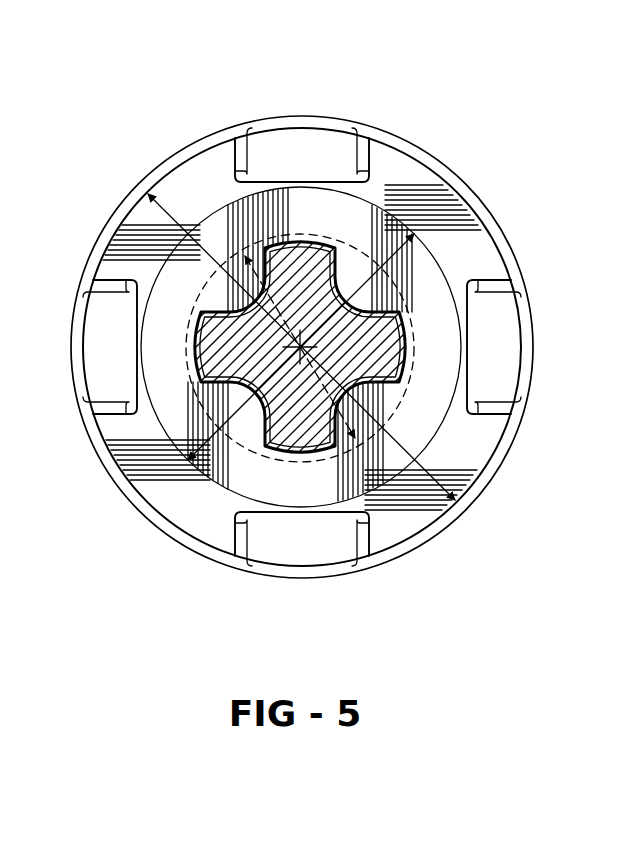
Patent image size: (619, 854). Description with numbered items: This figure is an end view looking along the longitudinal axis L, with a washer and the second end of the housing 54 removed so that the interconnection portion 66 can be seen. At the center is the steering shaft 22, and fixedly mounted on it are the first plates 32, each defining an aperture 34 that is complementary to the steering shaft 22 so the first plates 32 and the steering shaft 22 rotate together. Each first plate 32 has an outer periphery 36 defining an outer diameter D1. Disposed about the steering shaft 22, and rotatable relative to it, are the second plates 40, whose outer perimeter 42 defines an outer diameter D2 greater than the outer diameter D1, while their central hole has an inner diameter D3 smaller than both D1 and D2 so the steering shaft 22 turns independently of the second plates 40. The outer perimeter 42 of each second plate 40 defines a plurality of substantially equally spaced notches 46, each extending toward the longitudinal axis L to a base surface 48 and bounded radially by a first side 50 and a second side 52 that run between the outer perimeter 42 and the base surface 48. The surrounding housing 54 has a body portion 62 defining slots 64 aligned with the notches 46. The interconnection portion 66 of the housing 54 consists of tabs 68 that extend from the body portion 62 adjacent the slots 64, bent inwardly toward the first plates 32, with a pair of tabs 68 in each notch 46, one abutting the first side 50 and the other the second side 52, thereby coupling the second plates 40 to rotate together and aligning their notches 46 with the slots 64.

The steering shaft 22 is at (188, 468).
The first plates 32 is at (301, 332).
The aperture 34 is at (393, 345).
The outer periphery 36 is at (458, 207).
The second plates 40 is at (440, 166).
The outer perimeter 42 is at (470, 503).
The notch 46 is at (328, 140).
The base surface 48 is at (268, 177).
The first side 50 is at (374, 142).
The second side 52 is at (228, 145).
The housing 54 is at (141, 185).
The body portion 62 is at (122, 494).
The slot 64 is at (297, 112).
The interconnection portion 66 is at (233, 114).
The tabs 68 is at (250, 134).
The outer diameter D1 is at (196, 455).
The outer diameter D2 is at (400, 447).
The inner diameter D3 is at (302, 258).
The longitudinal axis L is at (268, 329).